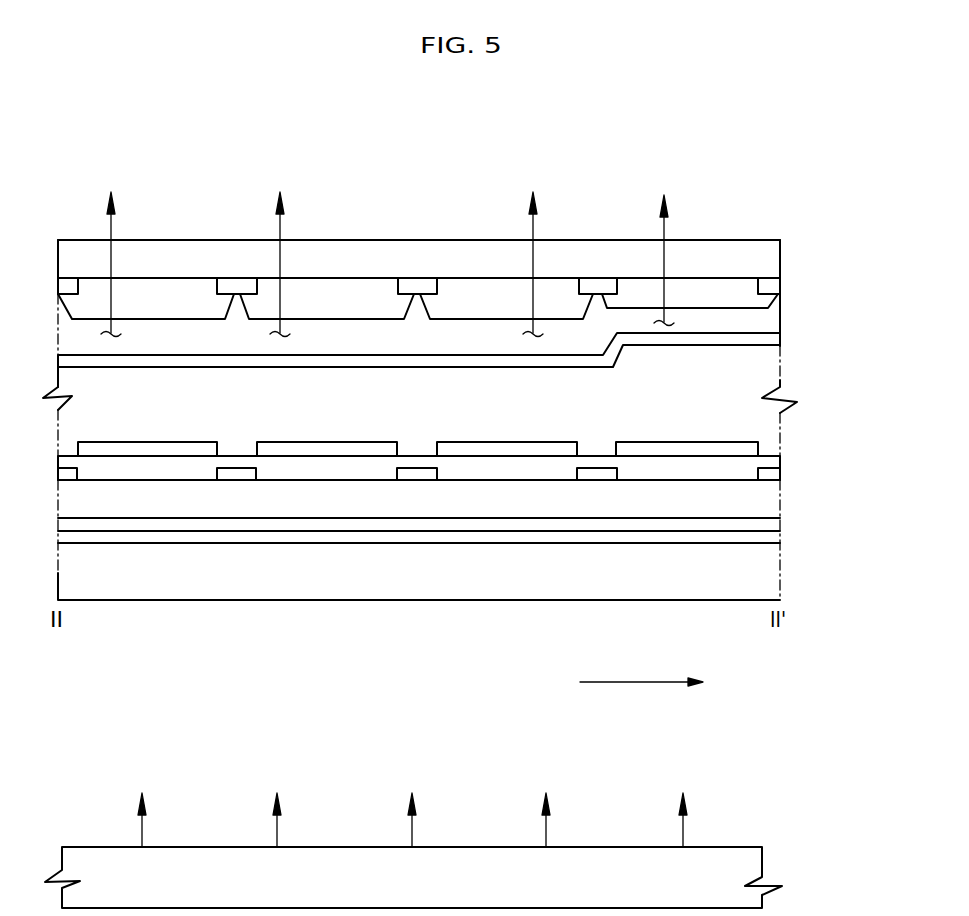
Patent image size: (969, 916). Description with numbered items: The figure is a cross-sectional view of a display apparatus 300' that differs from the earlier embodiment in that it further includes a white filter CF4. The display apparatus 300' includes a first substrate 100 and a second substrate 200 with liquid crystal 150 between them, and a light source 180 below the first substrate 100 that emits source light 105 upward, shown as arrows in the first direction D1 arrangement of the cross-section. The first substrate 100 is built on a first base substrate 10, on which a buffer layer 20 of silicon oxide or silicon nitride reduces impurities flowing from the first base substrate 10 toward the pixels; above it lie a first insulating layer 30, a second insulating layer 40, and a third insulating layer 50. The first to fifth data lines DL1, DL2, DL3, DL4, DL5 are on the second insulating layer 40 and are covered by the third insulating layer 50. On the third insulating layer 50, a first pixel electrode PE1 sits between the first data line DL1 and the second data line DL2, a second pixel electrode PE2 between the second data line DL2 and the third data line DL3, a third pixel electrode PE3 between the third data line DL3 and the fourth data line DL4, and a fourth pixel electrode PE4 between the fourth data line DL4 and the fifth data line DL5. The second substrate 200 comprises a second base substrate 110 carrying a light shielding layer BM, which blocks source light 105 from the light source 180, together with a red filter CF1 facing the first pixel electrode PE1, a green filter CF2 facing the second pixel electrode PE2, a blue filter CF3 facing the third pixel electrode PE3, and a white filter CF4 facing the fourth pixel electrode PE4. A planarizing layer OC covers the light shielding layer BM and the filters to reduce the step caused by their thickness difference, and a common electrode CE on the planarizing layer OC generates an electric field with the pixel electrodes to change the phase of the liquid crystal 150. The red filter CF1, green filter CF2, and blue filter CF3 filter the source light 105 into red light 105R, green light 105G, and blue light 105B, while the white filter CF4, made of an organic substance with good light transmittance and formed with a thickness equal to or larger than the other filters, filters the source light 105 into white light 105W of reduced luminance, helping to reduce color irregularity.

The display apparatus 300' is at (419, 158).
The second substrate 200 is at (474, 284).
The second base substrate 110 is at (778, 263).
The light shielding layer BM is at (233, 287).
The planarizing layer OC is at (777, 306).
The common electrode CE is at (450, 360).
The red filter CF1 is at (137, 300).
The green filter CF2 is at (362, 300).
The blue filter CF3 is at (488, 300).
The white filter CF4 is at (740, 295).
The red light 105R is at (109, 224).
The green light 105G is at (282, 224).
The blue light 105B is at (535, 225).
The white light 105W is at (666, 224).
The liquid crystal 150 is at (778, 424).
The first substrate 100 is at (474, 545).
The third insulating layer 50 is at (778, 464).
The second insulating layer 40 is at (778, 494).
The first insulating layer 30 is at (778, 525).
The buffer layer 20 is at (778, 546).
The first base substrate 10 is at (778, 576).
The first pixel electrode PE1 is at (155, 450).
The second pixel electrode PE2 is at (333, 450).
The third pixel electrode PE3 is at (510, 450).
The fourth pixel electrode PE4 is at (690, 450).
The first data line DL1 is at (70, 473).
The second data line DL2 is at (228, 473).
The third data line DL3 is at (408, 475).
The fourth data line DL4 is at (588, 475).
The fifth data line DL5 is at (768, 475).
The first direction D1 is at (654, 682).
The light source 180 is at (762, 866).
The source light 105 is at (144, 822).